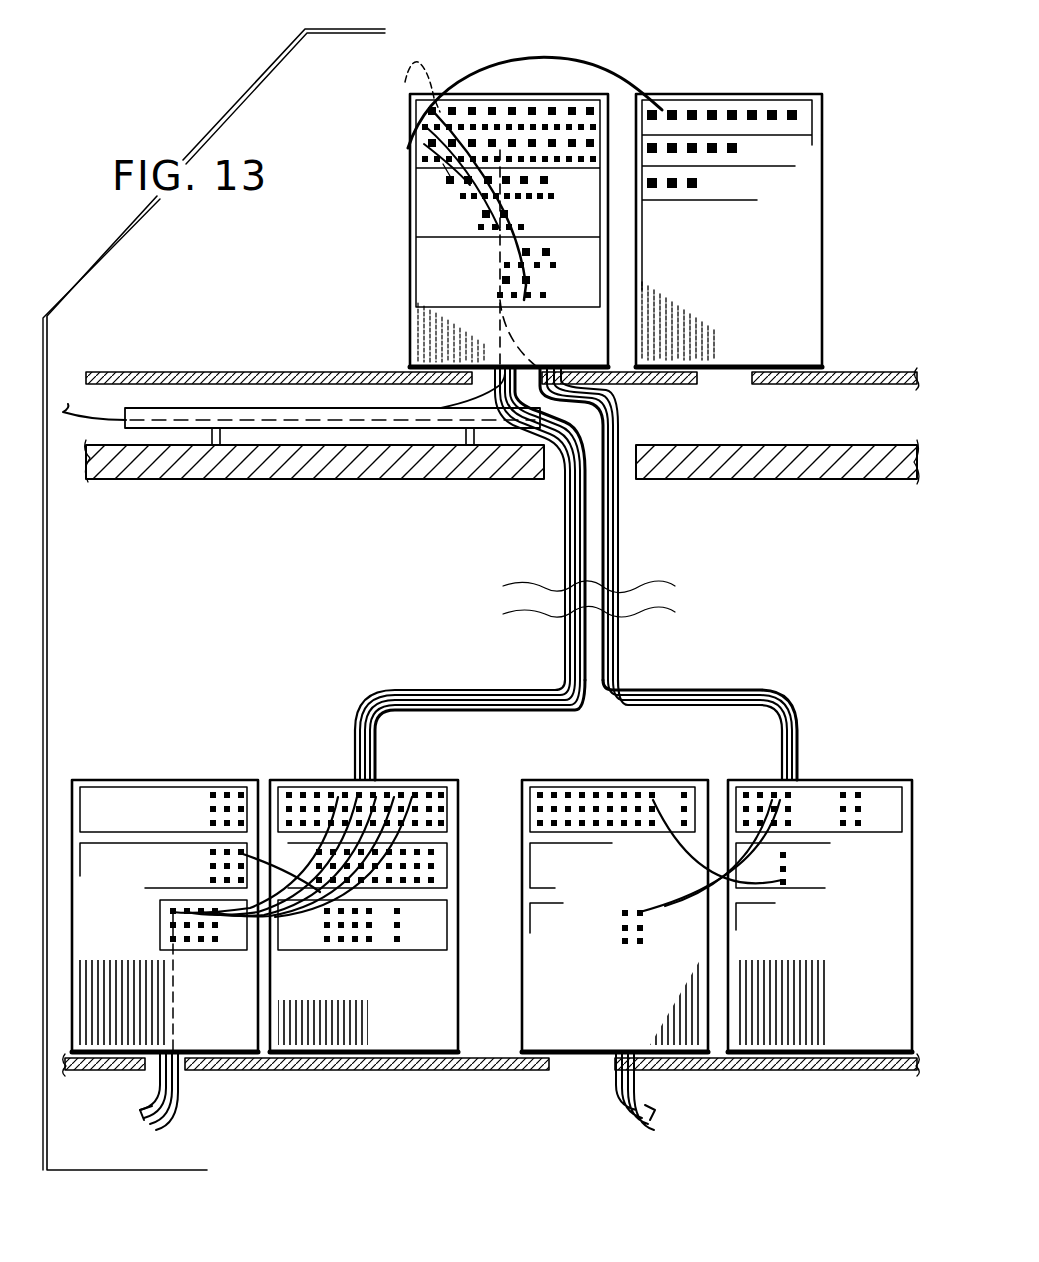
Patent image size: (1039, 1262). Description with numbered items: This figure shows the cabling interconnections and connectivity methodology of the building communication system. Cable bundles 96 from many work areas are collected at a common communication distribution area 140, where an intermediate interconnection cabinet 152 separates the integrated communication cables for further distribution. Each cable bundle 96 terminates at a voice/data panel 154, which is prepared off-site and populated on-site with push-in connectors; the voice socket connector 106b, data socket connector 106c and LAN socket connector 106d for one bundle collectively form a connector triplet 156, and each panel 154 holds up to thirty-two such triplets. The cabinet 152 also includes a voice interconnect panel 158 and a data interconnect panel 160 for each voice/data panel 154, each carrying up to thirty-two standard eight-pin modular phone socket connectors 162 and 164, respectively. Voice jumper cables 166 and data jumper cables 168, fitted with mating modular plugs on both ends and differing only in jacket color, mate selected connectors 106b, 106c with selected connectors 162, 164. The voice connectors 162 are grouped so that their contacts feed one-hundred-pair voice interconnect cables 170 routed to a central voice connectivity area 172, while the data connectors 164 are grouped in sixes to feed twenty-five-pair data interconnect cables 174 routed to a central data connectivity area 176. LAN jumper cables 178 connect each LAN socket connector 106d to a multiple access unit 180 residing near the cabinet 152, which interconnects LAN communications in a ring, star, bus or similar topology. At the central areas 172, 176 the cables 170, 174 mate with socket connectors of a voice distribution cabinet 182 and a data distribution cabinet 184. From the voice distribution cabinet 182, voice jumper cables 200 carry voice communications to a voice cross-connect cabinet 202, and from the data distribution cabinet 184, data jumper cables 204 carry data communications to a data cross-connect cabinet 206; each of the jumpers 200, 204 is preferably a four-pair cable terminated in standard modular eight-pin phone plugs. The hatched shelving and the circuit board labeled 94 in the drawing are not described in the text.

The circuit board 94 is at (322, 408).
The cable bundle 96 is at (452, 390).
The voice socket connector 106b is at (424, 144).
The data socket connector 106c is at (425, 126).
The LAN socket connector 106d is at (432, 110).
The common communication distribution area 140 is at (758, 36).
The intermediate interconnection cabinet 152 is at (411, 270).
The voice/data panel 154 is at (562, 104).
The connector triplet 156 is at (408, 82).
The voice interconnect panel 158 is at (562, 298).
The data interconnect panel 160 is at (427, 216).
The voice connectors 162 is at (540, 266).
The data connectors 164 is at (530, 198).
The voice jumper cables 166 is at (500, 240).
The data jumper cables 168 is at (443, 164).
The voice interconnect cable 170 is at (622, 556).
The central voice connectivity area 172 is at (822, 660).
The data interconnect cable 174 is at (492, 684).
The central data connectivity area 176 is at (224, 688).
The LAN jumper cables 178 is at (660, 108).
The multiple access unit 180 is at (780, 108).
The voice distribution cabinet 182 is at (830, 778).
The data distribution cabinet 184 is at (332, 778).
The voice jumper cables 200 is at (690, 898).
The voice cross-connect cabinet 202 is at (630, 778).
The data jumper cables 204 is at (304, 936).
The data cross-connect cabinet 206 is at (190, 778).